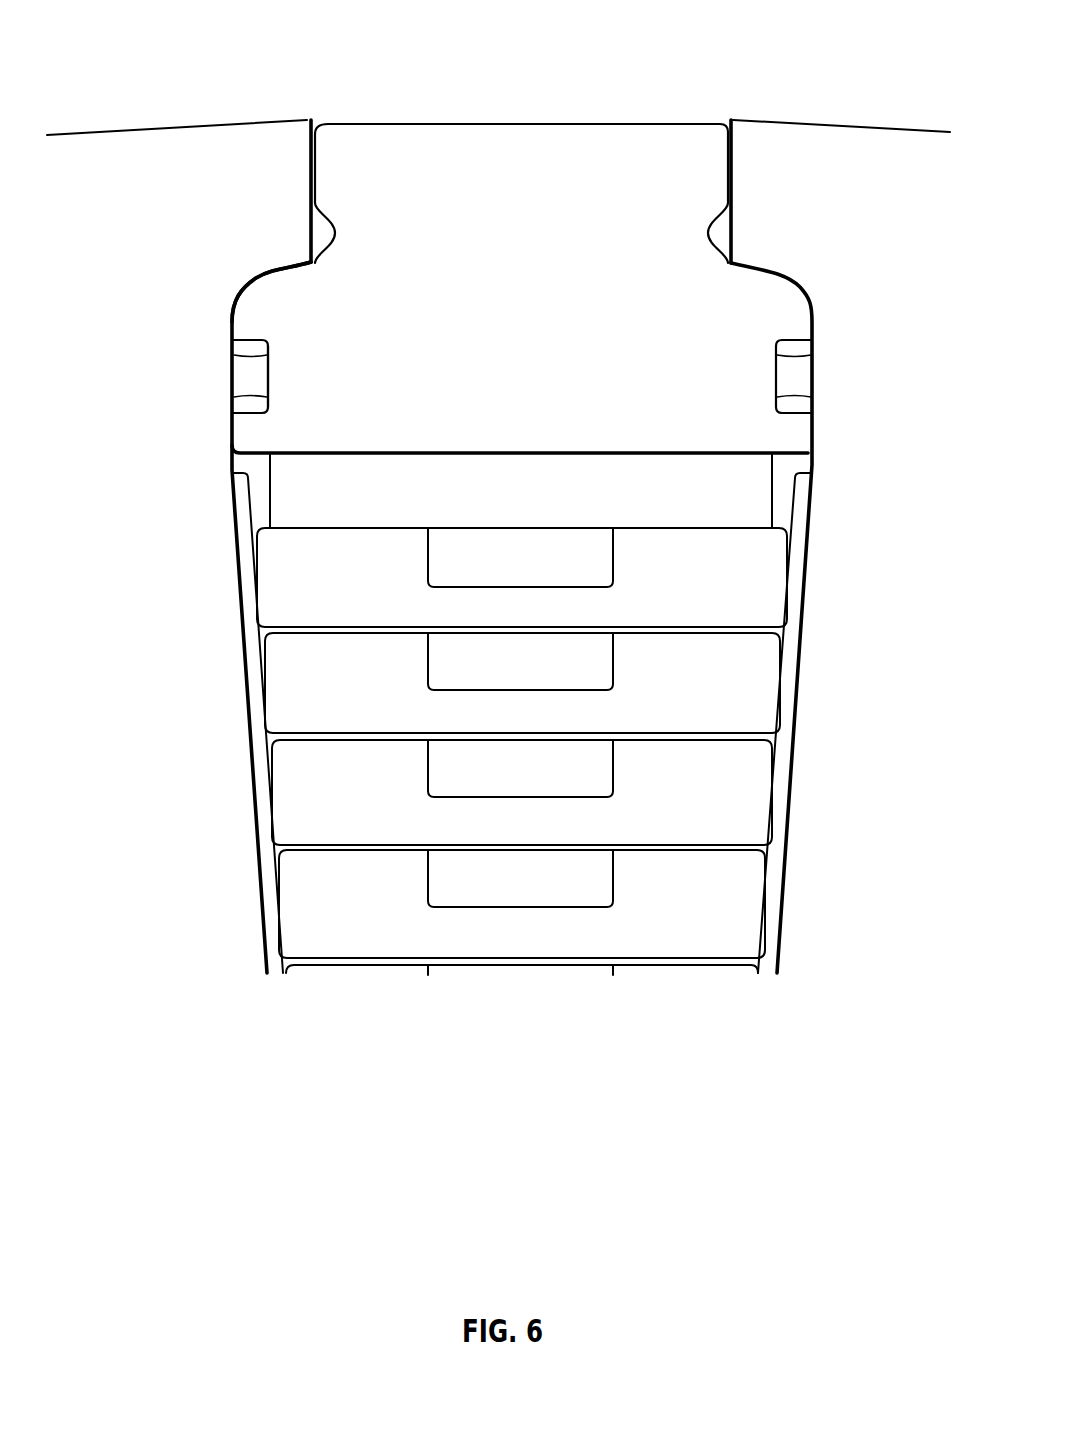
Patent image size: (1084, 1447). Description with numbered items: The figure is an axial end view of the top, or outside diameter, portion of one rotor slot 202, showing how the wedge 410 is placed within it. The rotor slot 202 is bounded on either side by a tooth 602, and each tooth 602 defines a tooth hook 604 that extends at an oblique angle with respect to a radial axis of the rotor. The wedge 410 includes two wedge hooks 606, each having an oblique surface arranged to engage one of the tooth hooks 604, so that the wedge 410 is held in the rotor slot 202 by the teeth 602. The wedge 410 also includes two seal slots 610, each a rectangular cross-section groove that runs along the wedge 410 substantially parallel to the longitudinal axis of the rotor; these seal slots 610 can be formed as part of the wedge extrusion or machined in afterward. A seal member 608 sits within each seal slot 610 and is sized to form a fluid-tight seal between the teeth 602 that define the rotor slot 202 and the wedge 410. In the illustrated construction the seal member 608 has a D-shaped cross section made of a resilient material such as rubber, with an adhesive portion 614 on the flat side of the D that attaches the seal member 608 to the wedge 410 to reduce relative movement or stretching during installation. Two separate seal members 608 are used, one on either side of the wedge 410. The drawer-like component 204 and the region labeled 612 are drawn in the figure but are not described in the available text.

The rotor slot 202 is at (672, 100).
The drawer 204 is at (302, 595).
The wedge 410 is at (541, 190).
The tooth 602 is at (204, 196).
The tooth hook 604 is at (258, 283).
The wedge hook 606 is at (770, 270).
The seal member 608 is at (248, 377).
The seal slot 610 is at (775, 375).
The frame opening 612 is at (733, 490).
The adhesive portion 614 is at (267, 373).